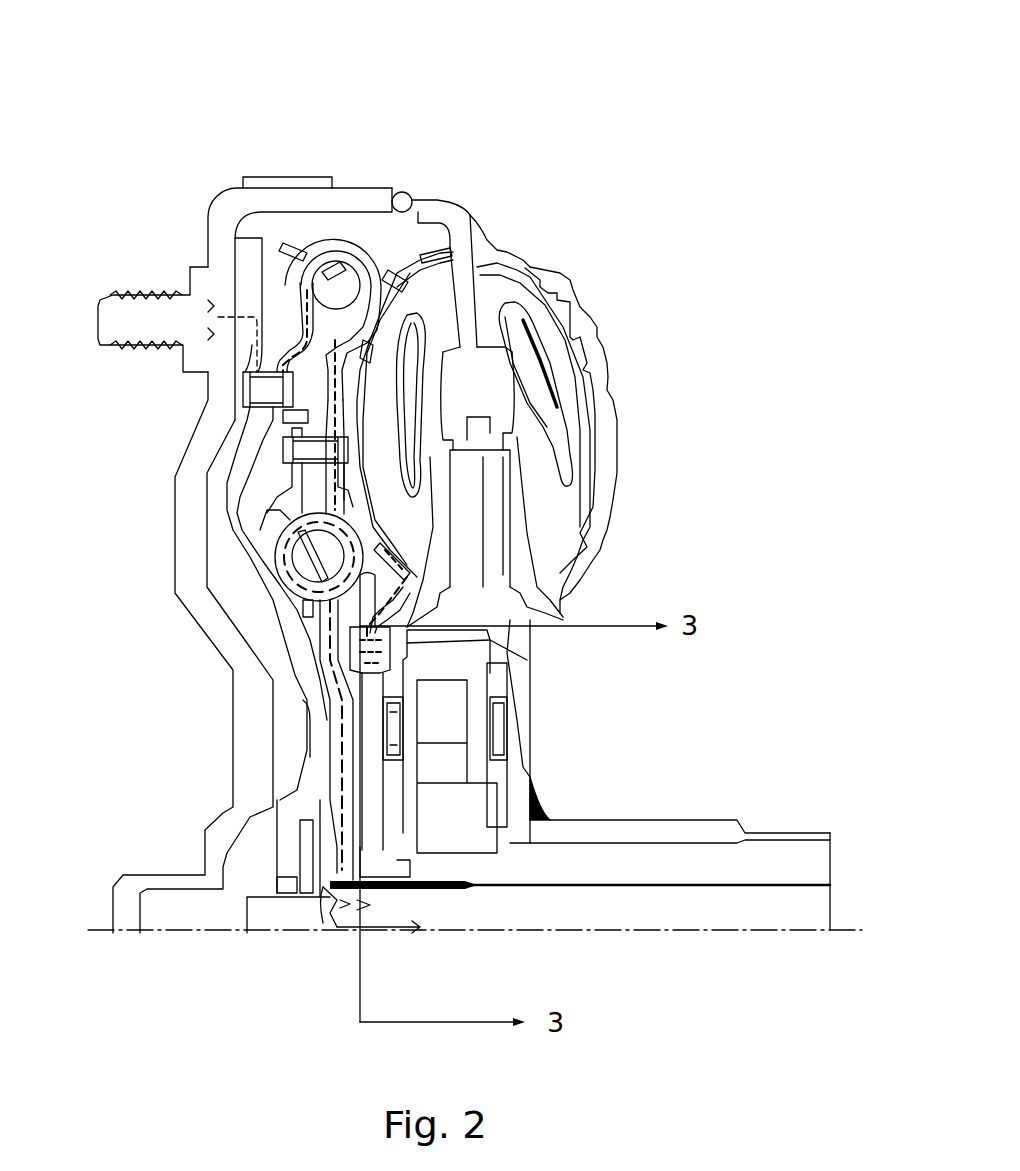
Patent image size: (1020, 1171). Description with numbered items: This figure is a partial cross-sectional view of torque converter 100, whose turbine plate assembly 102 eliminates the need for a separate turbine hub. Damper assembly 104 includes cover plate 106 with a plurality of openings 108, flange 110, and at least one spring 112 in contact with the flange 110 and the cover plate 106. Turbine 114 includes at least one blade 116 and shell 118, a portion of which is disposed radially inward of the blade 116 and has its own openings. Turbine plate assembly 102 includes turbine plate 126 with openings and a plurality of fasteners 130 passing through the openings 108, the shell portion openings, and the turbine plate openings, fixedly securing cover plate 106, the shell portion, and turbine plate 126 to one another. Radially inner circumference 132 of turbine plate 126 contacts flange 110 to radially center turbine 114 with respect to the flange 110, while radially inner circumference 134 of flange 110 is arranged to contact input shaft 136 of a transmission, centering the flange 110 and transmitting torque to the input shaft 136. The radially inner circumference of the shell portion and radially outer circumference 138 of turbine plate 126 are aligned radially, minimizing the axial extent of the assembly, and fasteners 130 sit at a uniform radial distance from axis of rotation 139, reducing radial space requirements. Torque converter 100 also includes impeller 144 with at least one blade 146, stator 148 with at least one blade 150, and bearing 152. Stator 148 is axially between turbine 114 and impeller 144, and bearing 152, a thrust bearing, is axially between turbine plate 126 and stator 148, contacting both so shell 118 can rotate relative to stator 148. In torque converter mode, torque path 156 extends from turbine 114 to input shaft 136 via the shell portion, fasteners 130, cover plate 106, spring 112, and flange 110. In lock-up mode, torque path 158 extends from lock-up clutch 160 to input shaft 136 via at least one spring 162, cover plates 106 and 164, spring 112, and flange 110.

The torque converter 100 is at (692, 103).
The turbine plate assembly 102 is at (430, 607).
The damper assembly 104 is at (262, 213).
The cover plate 106 is at (367, 717).
The openings 108 is at (357, 647).
The flange 110 is at (233, 803).
The spring 112 is at (275, 567).
The turbine 114 is at (443, 225).
The blade 116 is at (410, 297).
The shell 118 is at (412, 263).
The turbine plate 126 is at (350, 750).
The fasteners 130 is at (397, 663).
The radially inner circumference 132 is at (557, 820).
The radially inner circumference 134 is at (637, 843).
The input shaft 136 is at (457, 913).
The radially outer circumference 138 is at (330, 700).
The axis of rotation 139 is at (760, 930).
The impeller 144 is at (502, 281).
The blade 146 is at (570, 357).
The stator 148 is at (509, 670).
The blade 150 is at (470, 500).
The bearing 152 is at (397, 727).
The torque path 156 is at (327, 913).
The torque path 158 is at (323, 900).
The lock-up clutch 160 is at (213, 241).
The spring 162 is at (328, 240).
The cover plate 164 is at (283, 500).